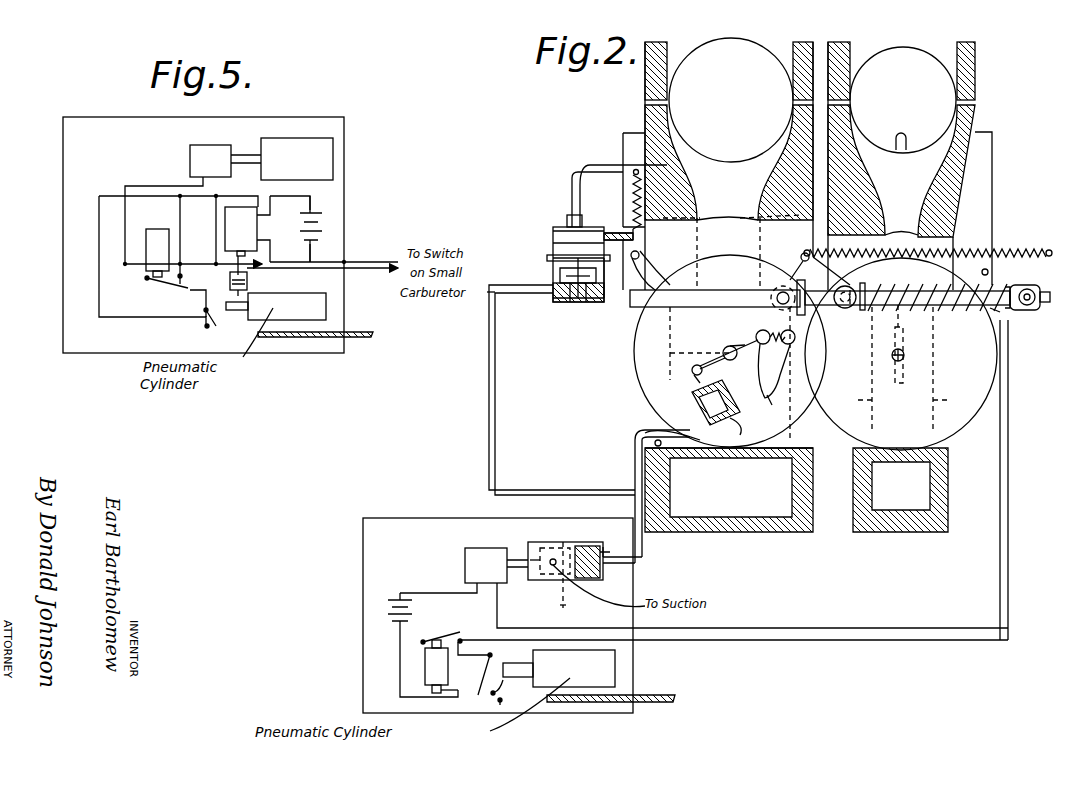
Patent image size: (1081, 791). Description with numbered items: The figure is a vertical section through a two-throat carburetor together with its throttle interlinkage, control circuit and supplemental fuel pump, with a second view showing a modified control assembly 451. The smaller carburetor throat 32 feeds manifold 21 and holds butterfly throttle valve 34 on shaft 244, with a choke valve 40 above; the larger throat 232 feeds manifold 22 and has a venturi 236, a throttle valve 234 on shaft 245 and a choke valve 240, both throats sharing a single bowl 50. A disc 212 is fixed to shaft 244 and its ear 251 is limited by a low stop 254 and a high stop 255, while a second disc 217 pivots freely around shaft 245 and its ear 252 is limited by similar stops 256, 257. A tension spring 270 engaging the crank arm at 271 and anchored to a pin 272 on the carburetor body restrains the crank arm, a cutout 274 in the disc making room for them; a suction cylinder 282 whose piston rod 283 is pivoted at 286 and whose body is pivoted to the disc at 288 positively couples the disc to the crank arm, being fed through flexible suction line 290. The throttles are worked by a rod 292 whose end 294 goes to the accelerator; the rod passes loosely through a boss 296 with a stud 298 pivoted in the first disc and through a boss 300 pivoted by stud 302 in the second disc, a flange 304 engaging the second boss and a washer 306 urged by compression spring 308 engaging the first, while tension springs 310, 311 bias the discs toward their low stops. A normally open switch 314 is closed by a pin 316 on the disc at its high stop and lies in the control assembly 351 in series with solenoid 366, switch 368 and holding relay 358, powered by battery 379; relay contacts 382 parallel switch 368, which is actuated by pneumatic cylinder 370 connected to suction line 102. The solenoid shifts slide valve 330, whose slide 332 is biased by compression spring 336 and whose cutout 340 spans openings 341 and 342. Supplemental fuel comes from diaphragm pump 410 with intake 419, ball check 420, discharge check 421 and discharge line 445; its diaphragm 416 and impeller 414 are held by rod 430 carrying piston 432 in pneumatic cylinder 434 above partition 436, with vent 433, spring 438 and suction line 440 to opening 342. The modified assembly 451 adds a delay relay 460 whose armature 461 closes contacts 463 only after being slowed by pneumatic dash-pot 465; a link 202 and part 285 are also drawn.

In FIG. 2, the manifold 21 is at (910, 486).
In FIG. 2, the manifold 22 is at (775, 497).
In FIG. 2, the carburetor throat 32 is at (912, 223).
In FIG. 2, the throttle valve 34 is at (914, 316).
In FIG. 2, the choke valve 40 is at (922, 50).
In FIG. 2, the bowl 50 is at (982, 176).
In FIG. 5, the line 102 is at (368, 338).
In FIG. 2, the line 102 is at (668, 702).
In FIG. 2, the link 202 is at (718, 352).
In FIG. 2, the disc 212 is at (1000, 372).
In FIG. 2, the second disc 217 is at (740, 446).
In FIG. 2, the carburetor throat 232 is at (748, 203).
In FIG. 2, the throttle valve 234 is at (690, 343).
In FIG. 2, the venturi 236 is at (832, 224).
In FIG. 2, the choke valve 240 is at (770, 53).
In FIG. 2, the shaft 244 is at (906, 355).
In FIG. 2, the shaft 245 is at (724, 348).
In FIG. 2, the ear 251 is at (835, 247).
In FIG. 2, the ear 252 is at (659, 272).
In FIG. 2, the low stop 254 is at (990, 272).
In FIG. 2, the high stop 255 is at (760, 262).
In FIG. 2, the low stop 256 is at (645, 255).
In FIG. 2, the high stop 257 is at (652, 443).
In FIG. 2, the tension spring 270 is at (760, 334).
In FIG. 2, the engagement point 271 is at (774, 371).
In FIG. 2, the pin 272 is at (795, 337).
In FIG. 2, the cutout 274 is at (775, 407).
In FIG. 2, the suction cylinder 282 is at (706, 406).
In FIG. 2, the piston rod 283 is at (753, 426).
In FIG. 2, the plunger 285 is at (700, 392).
In FIG. 2, the pivot 286 is at (694, 374).
In FIG. 2, the pivot 288 is at (740, 372).
In FIG. 2, the flexible suction line 290 is at (634, 508).
In FIG. 2, the rod 292 is at (783, 304).
In FIG. 2, the end 294 is at (1015, 310).
In FIG. 2, the boss 296 is at (864, 284).
In FIG. 2, the stud 298 is at (840, 305).
In FIG. 2, the boss 300 is at (820, 292).
In FIG. 2, the stud 302 is at (773, 303).
In FIG. 2, the flange 304 is at (796, 284).
In FIG. 2, the washer 306 is at (937, 305).
In FIG. 2, the compression spring 308 is at (912, 298).
In FIG. 2, the tension spring 310 is at (995, 251).
In FIG. 2, the tension spring 311 is at (643, 210).
In FIG. 2, the electrical switch 314 is at (1005, 325).
In FIG. 2, the pin 316 is at (995, 312).
In FIG. 5, the slide valve 330 is at (291, 137).
In FIG. 2, the slide valve 330 is at (535, 540).
In FIG. 2, the slide 332 is at (542, 580).
In FIG. 2, the compression spring 336 is at (616, 547).
In FIG. 2, the cutout 340 is at (578, 610).
In FIG. 2, the opening 341 is at (563, 542).
In FIG. 2, the opening 342 is at (592, 547).
In FIG. 2, the control assembly 351 is at (483, 515).
In FIG. 5, the holding relay 358 is at (157, 236).
In FIG. 2, the holding relay 358 is at (428, 666).
In FIG. 5, the solenoid 366 is at (201, 153).
In FIG. 2, the solenoid 366 is at (505, 545).
In FIG. 5, the switch 368 is at (222, 324).
In FIG. 2, the switch 368 is at (507, 695).
In FIG. 5, the pneumatic cylinder 370 is at (328, 304).
In FIG. 2, the pneumatic cylinder 370 is at (607, 666).
In FIG. 5, the battery 379 is at (326, 214).
In FIG. 2, the battery 379 is at (398, 602).
In FIG. 2, the contacts 382 is at (527, 663).
In FIG. 2, the diaphragm pump 410 is at (551, 233).
In FIG. 2, the impeller 414 is at (580, 258).
In FIG. 2, the diaphragm 416 is at (552, 243).
In FIG. 2, the intake 419 is at (610, 232).
In FIG. 2, the ball check 420 is at (636, 236).
In FIG. 2, the check 421 is at (568, 217).
In FIG. 2, the rod 430 is at (583, 302).
In FIG. 2, the piston 432 is at (561, 300).
In FIG. 2, the vent 433 is at (576, 300).
In FIG. 2, the pneumatic cylinder 434 is at (605, 290).
In FIG. 2, the fixed partition 436 is at (552, 263).
In FIG. 2, the spring 438 is at (552, 294).
In FIG. 2, the suction line 440 is at (495, 407).
In FIG. 2, the discharge line 445 is at (609, 166).
In FIG. 5, the modified control assembly 451 is at (273, 116).
In FIG. 5, the delay relay 460 is at (257, 226).
In FIG. 5, the armature 461 is at (187, 279).
In FIG. 5, the contacts 463 is at (262, 263).
In FIG. 5, the pneumatic dash-pot 465 is at (247, 280).